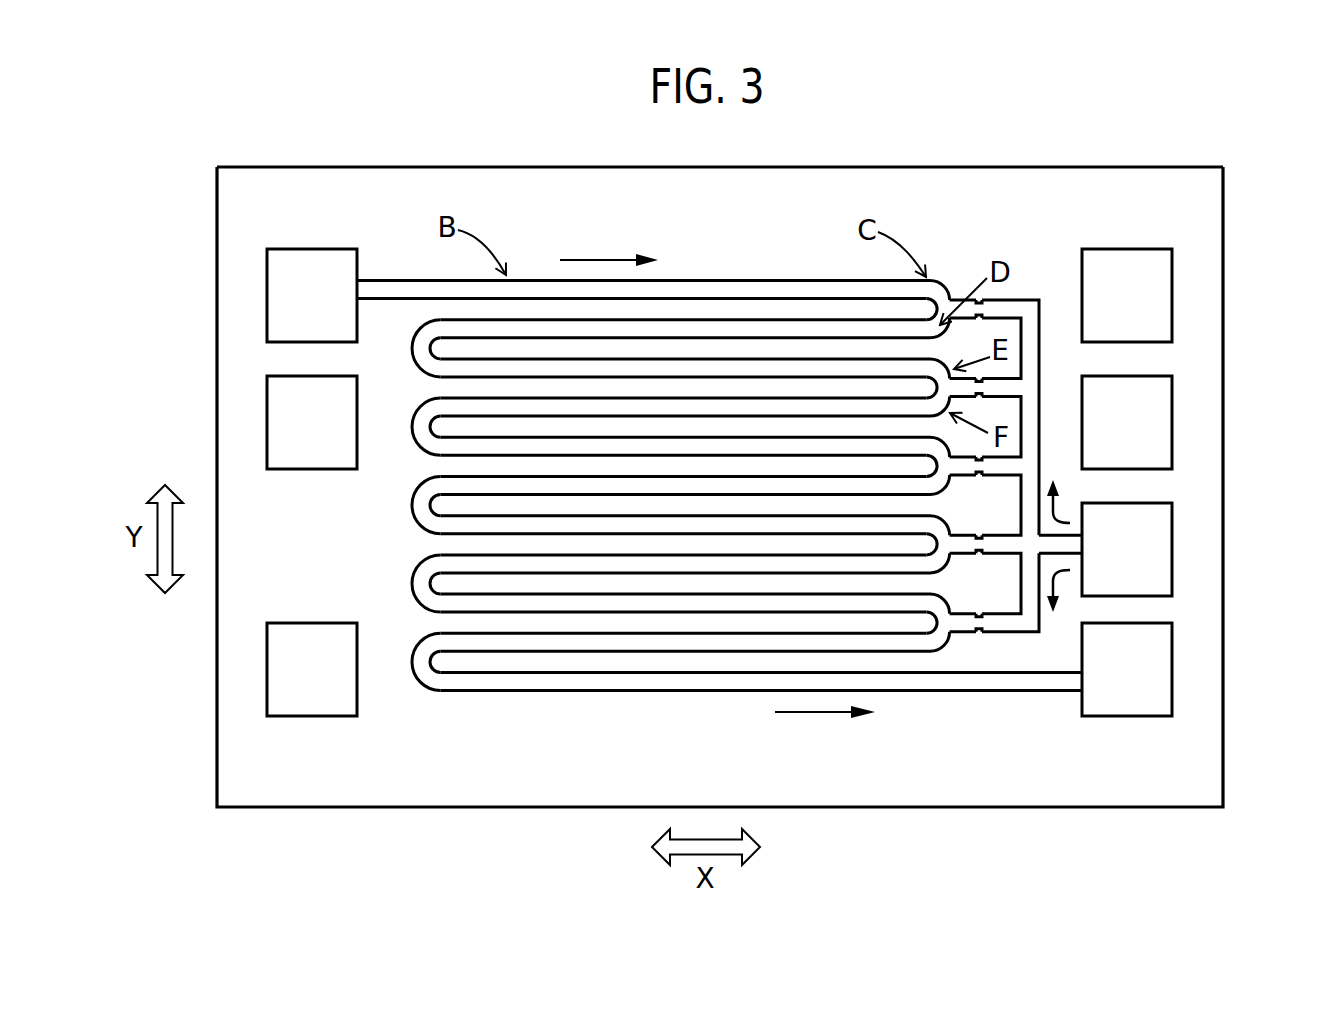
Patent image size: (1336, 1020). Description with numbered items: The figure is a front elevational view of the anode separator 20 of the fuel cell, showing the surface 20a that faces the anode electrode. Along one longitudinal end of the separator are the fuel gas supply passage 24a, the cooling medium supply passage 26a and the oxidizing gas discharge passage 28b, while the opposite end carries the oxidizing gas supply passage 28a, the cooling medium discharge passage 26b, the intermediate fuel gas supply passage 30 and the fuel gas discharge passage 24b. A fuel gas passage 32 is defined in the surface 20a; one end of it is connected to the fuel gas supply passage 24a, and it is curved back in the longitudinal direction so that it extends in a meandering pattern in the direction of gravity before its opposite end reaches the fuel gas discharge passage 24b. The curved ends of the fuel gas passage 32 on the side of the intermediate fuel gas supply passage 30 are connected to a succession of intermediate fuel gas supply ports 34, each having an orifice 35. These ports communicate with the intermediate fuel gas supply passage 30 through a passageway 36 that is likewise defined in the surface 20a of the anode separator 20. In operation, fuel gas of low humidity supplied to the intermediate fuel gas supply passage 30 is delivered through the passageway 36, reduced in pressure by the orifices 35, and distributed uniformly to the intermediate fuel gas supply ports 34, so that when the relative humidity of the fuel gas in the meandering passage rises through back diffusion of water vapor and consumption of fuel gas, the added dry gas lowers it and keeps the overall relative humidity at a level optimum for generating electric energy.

The anode separator 20 is at (1040, 118).
The surface 20a is at (440, 188).
The fuel gas supply passage 24a is at (292, 317).
The fuel gas discharge passage 24b is at (1128, 676).
The cooling medium supply passage 26a is at (292, 417).
The cooling medium discharge passage 26b is at (1128, 436).
The oxidizing gas supply passage 28a is at (1128, 296).
The oxidizing gas discharge passage 28b is at (292, 680).
The intermediate fuel gas supply passage 30 is at (1128, 560).
The fuel gas passage 32 is at (735, 290).
The intermediate fuel gas supply ports 34 is at (953, 625).
The orifices 35 is at (980, 638).
The passageway 36 is at (1030, 361).